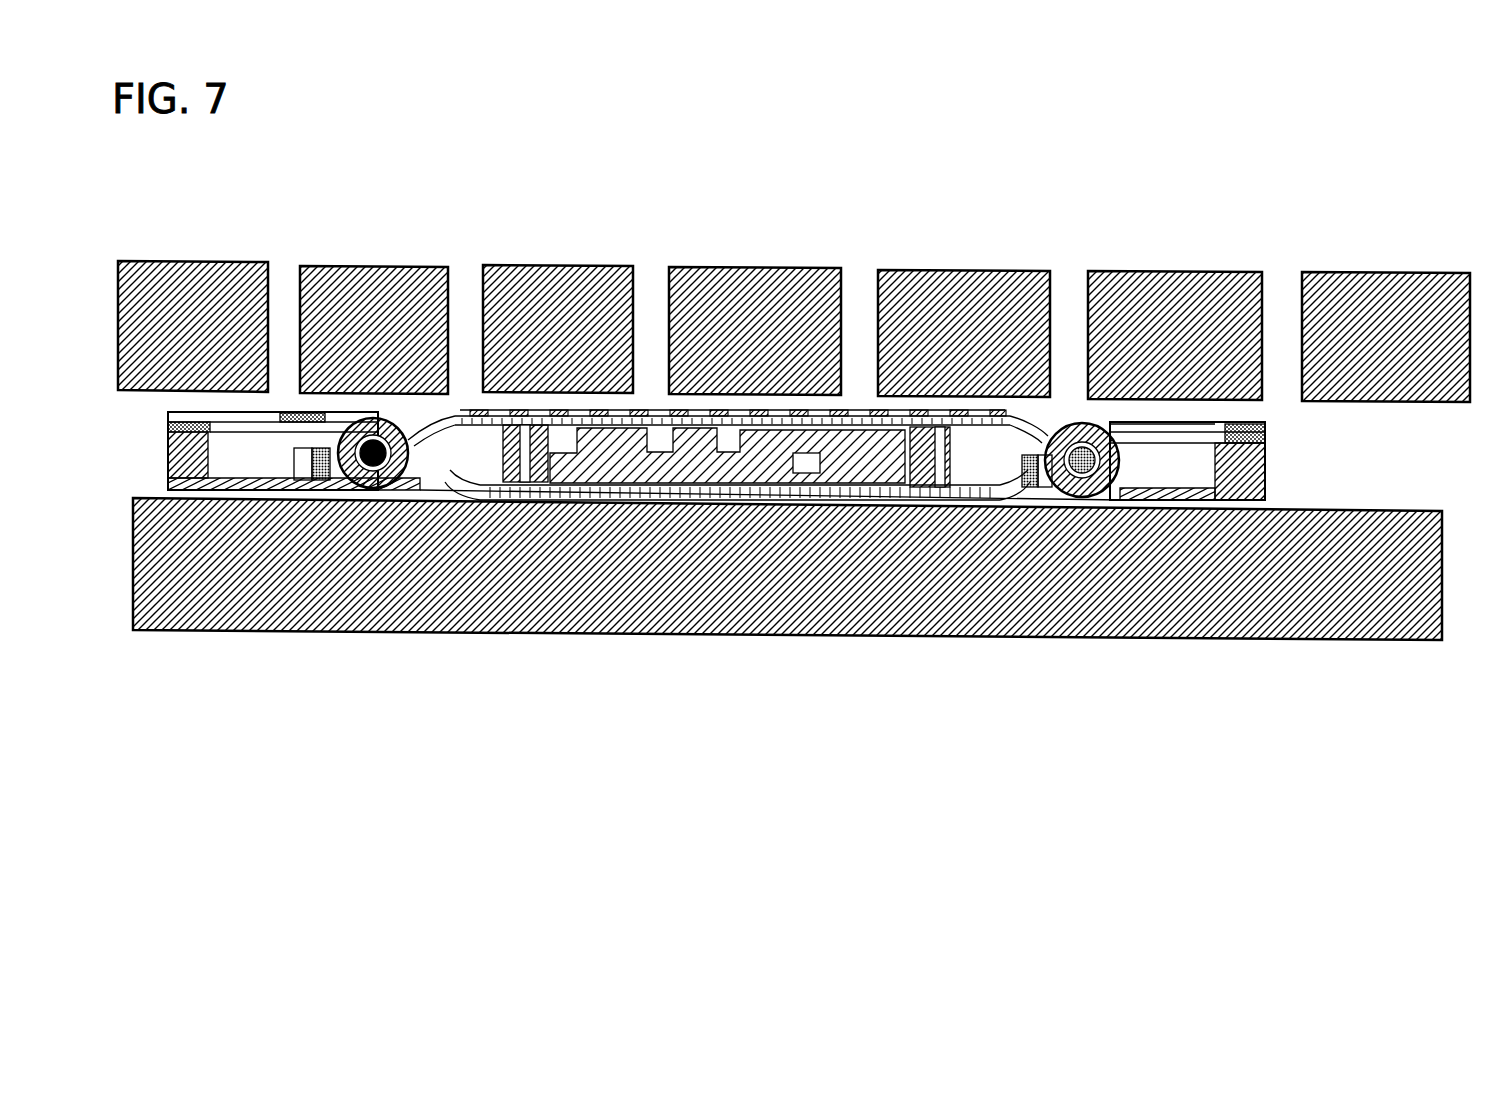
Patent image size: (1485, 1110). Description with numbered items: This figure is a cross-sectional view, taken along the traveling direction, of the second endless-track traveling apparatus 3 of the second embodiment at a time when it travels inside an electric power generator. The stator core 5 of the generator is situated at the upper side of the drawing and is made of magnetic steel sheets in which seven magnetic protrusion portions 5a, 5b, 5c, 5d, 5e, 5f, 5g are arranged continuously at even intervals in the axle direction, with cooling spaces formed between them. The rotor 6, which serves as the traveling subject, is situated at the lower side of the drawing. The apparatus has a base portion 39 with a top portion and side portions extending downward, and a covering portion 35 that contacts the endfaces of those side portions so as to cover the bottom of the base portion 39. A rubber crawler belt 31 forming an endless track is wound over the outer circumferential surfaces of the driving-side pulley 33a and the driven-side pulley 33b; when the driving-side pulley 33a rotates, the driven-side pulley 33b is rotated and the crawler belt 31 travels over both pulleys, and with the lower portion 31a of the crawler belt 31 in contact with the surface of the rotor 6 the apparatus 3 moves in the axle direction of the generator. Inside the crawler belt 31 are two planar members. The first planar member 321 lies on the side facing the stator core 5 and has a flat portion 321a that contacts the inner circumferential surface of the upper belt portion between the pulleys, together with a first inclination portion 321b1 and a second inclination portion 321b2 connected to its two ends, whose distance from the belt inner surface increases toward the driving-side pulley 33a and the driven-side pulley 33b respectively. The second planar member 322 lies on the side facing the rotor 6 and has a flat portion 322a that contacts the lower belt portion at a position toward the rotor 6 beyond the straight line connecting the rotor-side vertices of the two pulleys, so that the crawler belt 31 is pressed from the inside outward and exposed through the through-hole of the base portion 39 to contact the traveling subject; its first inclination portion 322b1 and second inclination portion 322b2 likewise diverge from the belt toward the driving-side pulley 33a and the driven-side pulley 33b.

The second endless-track traveling apparatus 3 is at (794, 485).
The stator core 5 is at (783, 266).
The magnetic protrusion portion 5a is at (190, 290).
The magnetic protrusion portion 5b is at (402, 288).
The magnetic protrusion portion 5c is at (596, 283).
The magnetic protrusion portion 5d is at (792, 283).
The magnetic protrusion portion 5e is at (1000, 288).
The magnetic protrusion portion 5f is at (1218, 288).
The magnetic protrusion portion 5g is at (1357, 288).
The rotor 6 is at (363, 580).
The crawler belt 31 is at (764, 631).
The bottom portion of housing 31a is at (770, 502).
The driving-side pulley 33a is at (345, 488).
The driven-side pulley 33b is at (1072, 492).
The covering portion 35 is at (1266, 432).
The base portion 39 is at (1245, 494).
The first planar member 321 is at (732, 283).
The flat portion 321a is at (838, 430).
The first inclination portion 321b1 is at (470, 412).
The second inclination portion 321b2 is at (1012, 422).
The second planar member 322 is at (737, 630).
The flat portion 322a is at (720, 502).
The first inclination portion 322b1 is at (480, 502).
The second inclination portion 322b2 is at (968, 506).